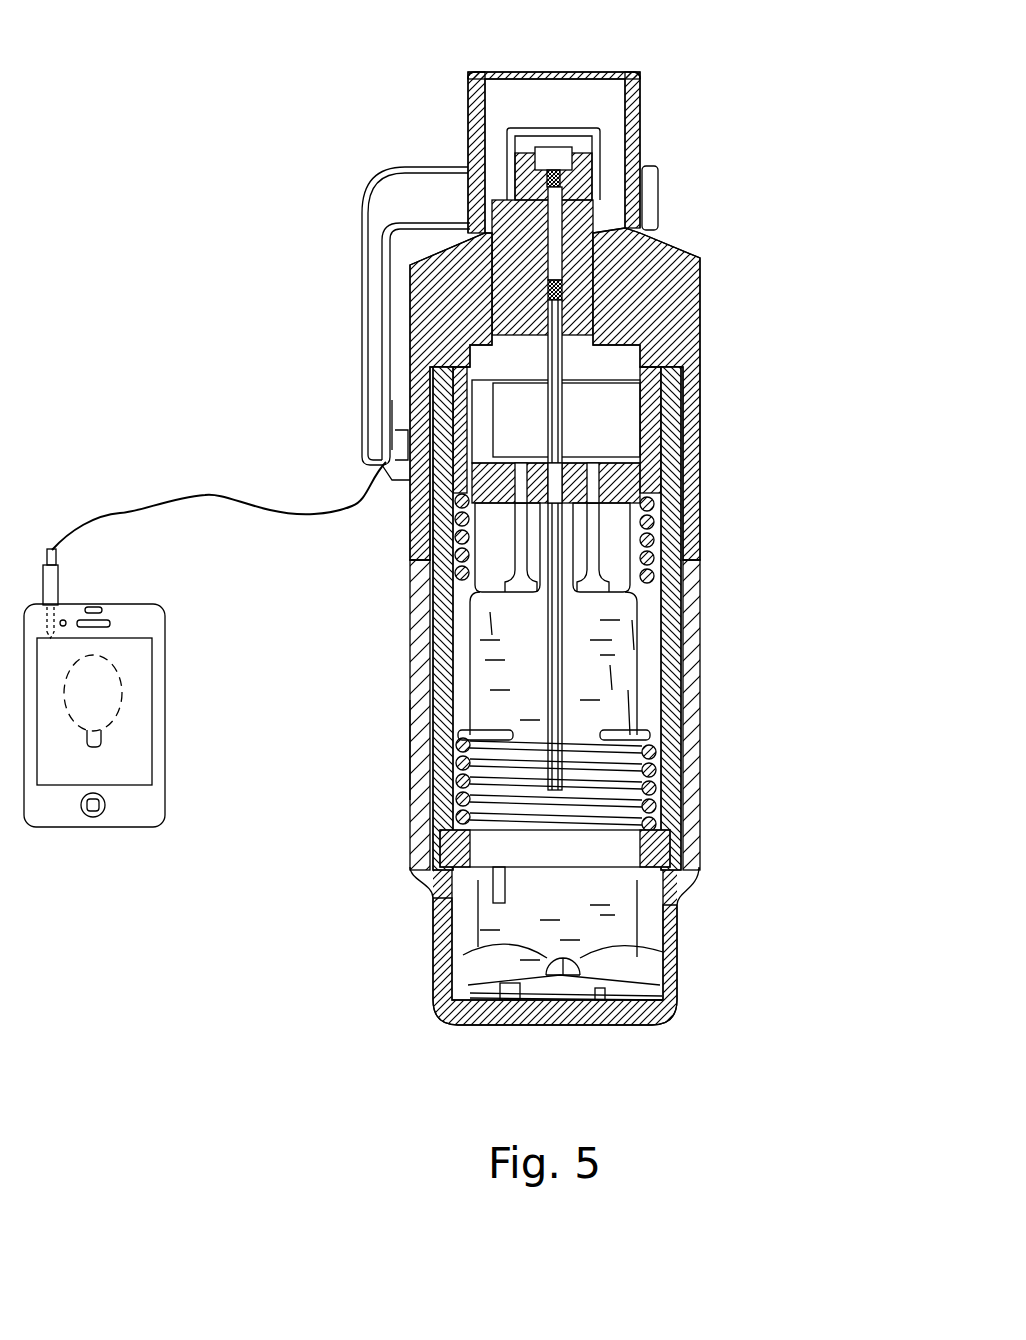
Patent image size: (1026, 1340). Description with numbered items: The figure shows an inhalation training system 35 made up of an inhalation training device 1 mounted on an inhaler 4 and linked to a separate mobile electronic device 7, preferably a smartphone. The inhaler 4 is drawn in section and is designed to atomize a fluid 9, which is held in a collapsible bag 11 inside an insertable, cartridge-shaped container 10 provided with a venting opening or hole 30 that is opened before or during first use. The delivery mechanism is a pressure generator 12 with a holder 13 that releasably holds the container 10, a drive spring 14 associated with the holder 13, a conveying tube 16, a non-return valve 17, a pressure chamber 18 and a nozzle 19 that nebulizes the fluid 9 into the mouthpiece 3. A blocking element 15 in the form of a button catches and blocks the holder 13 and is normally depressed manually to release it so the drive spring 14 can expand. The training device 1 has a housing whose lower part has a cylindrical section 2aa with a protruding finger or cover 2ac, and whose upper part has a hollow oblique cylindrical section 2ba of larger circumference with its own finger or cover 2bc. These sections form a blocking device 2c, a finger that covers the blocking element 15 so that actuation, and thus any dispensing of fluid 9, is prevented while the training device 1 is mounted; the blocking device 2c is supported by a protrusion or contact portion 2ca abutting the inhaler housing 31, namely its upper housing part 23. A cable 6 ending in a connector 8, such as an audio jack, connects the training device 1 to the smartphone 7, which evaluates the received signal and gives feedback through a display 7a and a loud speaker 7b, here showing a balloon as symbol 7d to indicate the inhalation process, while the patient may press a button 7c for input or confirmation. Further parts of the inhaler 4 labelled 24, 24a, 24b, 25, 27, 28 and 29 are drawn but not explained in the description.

The inhalation training system 35 is at (212, 83).
The inhalation training device 1 is at (360, 228).
The cylindrical section 2aa is at (470, 78).
The mouthpiece 3 is at (470, 122).
The finger or cover 2bc is at (392, 172).
The finger or cover 2ac is at (393, 248).
The blocking element 15 is at (440, 306).
The blocking device 2c is at (360, 345).
The protrusion or contact portion 2ca is at (400, 375).
The outer sleeve upper portion 24a is at (407, 425).
The upper housing part 23 is at (410, 434).
The inhaler housing 31 is at (410, 470).
The cable 6 is at (202, 497).
The connector 8 is at (53, 575).
The loud speaker 7b is at (98, 607).
The outer sleeve 24 is at (424, 632).
The electronic device 7 is at (167, 670).
The display 7a is at (137, 708).
The symbol 7d is at (120, 716).
The button 7c is at (93, 818).
The sleeve wall 25 is at (418, 758).
The support plate 24b is at (440, 806).
The drive spring 14 is at (653, 542).
The stirrer bearing 29 is at (527, 950).
The base bottom 27 is at (500, 988).
The inhaler 4 is at (410, 1030).
The nozzle 19 is at (560, 124).
The cylindrical section 2ba is at (660, 182).
The pressure chamber 18 is at (553, 228).
The non-return valve 17 is at (585, 220).
The pressure generator 12 is at (572, 303).
The conveying tube 16 is at (557, 403).
The holder 13 is at (640, 480).
The fluid 9 is at (600, 645).
The container 10 is at (633, 687).
The collapsible bag 11 is at (628, 740).
The venting opening or hole 30 is at (600, 972).
The stirrer 28 is at (620, 957).